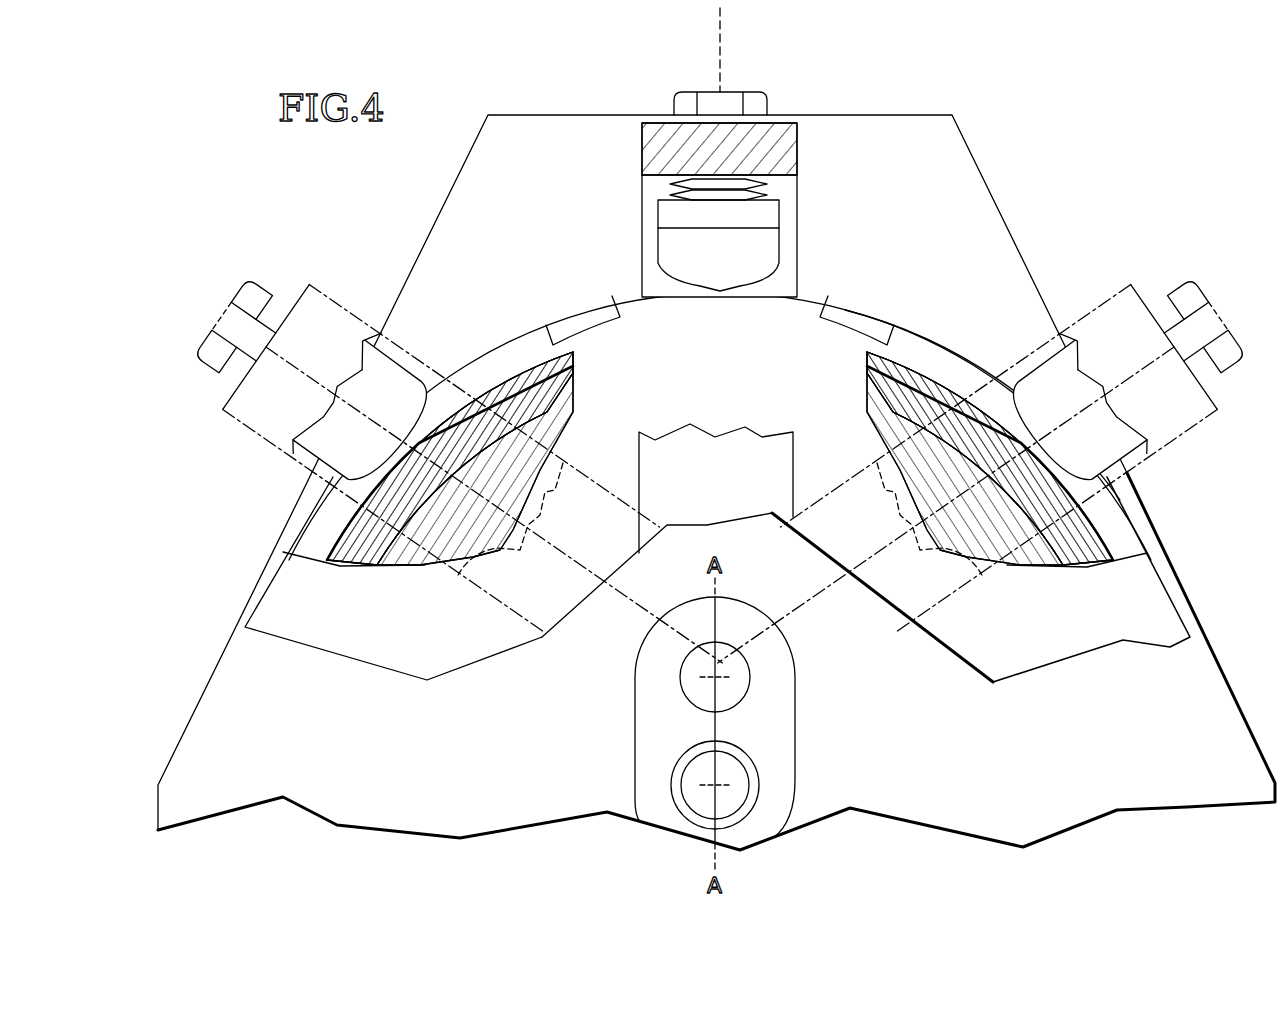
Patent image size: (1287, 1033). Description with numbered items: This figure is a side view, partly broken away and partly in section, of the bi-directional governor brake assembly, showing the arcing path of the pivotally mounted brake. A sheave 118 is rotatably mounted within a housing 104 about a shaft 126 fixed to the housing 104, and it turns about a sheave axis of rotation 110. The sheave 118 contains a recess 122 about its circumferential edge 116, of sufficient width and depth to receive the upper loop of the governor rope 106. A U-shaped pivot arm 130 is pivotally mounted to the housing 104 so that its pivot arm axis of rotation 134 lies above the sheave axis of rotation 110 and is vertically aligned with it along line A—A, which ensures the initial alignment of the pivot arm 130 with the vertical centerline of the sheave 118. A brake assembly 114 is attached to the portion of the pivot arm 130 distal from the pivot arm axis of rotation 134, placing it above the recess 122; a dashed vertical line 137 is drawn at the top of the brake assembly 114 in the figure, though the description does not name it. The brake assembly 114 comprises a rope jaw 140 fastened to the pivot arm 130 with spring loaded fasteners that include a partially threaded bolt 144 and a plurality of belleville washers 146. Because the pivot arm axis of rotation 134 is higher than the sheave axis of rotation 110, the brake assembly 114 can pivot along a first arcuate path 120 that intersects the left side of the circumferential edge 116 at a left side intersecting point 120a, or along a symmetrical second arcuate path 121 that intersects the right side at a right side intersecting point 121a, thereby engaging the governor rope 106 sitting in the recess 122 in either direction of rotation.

The housing 104 is at (367, 762).
The governor rope 106 is at (577, 362).
The rotation axis of the sheave assembly 110 is at (716, 784).
The brake assembly 114 is at (765, 152).
The circumferential edge of the sheave 116 is at (963, 358).
The sheave 118 is at (405, 636).
The first arcuate path 120 is at (490, 355).
The left side intersecting point 120a is at (595, 307).
The second arcuate path 121 is at (960, 322).
The right side intersecting point 121a is at (845, 307).
The recess 122 is at (1053, 535).
The shaft 126 is at (693, 795).
The pivot arm 130 is at (643, 210).
The pivot arm axis of rotation 134 is at (717, 676).
The axis 137 is at (720, 15).
The rope jaw 140 is at (740, 263).
The partially threaded bolt 144 is at (757, 105).
The belleville washers 146 is at (767, 194).